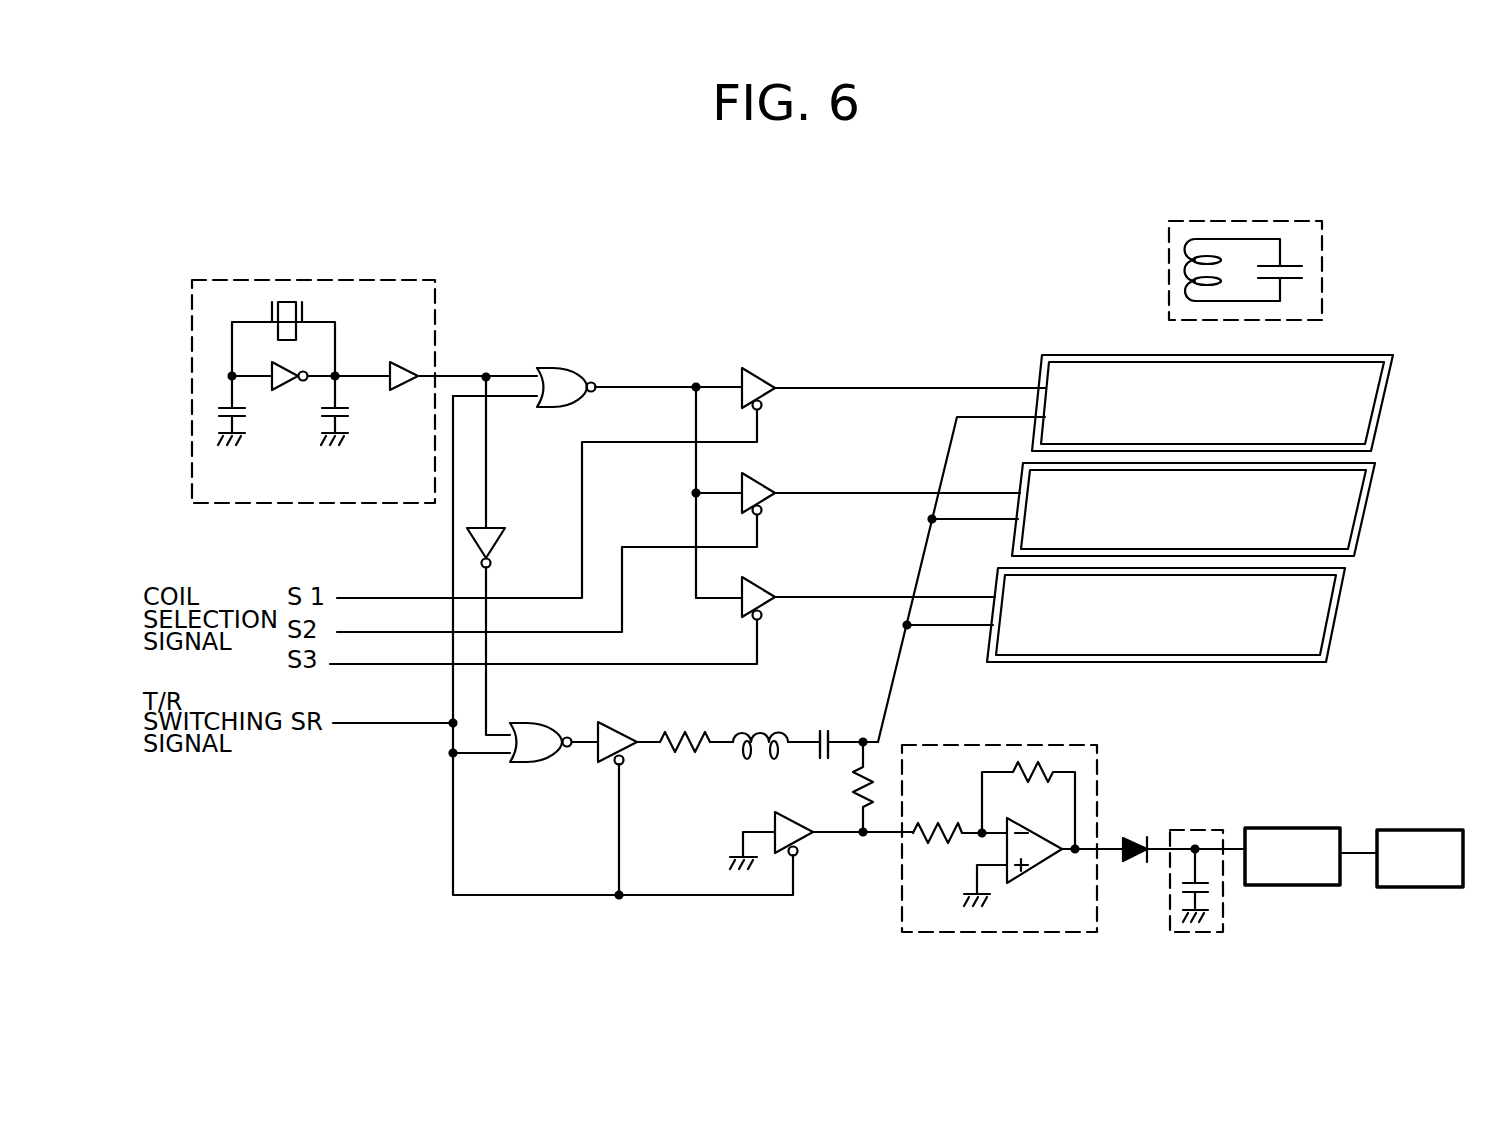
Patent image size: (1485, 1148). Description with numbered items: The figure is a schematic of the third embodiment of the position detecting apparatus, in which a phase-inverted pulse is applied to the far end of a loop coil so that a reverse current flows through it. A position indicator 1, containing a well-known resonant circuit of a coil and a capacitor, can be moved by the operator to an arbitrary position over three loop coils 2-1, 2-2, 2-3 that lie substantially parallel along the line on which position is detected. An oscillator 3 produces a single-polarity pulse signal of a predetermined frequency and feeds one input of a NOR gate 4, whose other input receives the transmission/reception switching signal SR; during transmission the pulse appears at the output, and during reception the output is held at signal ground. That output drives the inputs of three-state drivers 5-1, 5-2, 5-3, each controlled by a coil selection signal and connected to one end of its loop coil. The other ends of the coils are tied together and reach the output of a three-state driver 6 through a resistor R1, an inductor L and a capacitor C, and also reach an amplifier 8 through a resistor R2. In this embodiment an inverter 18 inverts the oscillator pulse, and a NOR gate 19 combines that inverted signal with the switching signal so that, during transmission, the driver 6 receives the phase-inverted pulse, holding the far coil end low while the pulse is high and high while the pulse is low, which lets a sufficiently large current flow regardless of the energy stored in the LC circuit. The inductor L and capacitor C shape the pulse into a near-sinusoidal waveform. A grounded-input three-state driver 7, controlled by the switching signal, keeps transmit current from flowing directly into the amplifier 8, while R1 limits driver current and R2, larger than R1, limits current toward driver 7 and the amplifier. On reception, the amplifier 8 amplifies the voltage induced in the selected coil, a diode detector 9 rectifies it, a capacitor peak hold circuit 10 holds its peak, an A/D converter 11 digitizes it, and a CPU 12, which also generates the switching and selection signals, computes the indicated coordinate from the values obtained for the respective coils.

The position indicator 1 is at (1181, 221).
The loop coil 2-1 is at (1380, 415).
The loop coil 2-2 is at (1362, 508).
The loop coil 2-3 is at (1338, 622).
The oscillator 3 is at (387, 280).
The NOR gate 4 is at (558, 368).
The three-state driver 5-1 is at (765, 375).
The three-state driver 5-2 is at (765, 480).
The three-state driver 5-3 is at (765, 585).
The three-state driver 6 is at (625, 722).
The three-state driver 7 is at (805, 840).
The amplifier 8 is at (1079, 745).
The detector 9 is at (1130, 837).
The peak hold circuit 10 is at (1200, 830).
The analog-to-digital converter 11 is at (1290, 828).
The central processing unit 12 is at (1425, 830).
The inverter 18 is at (503, 528).
The NOR gate 19 is at (530, 723).
The resistor R1 is at (685, 725).
The resistor R2 is at (840, 787).
The inductor L is at (760, 730).
The capacitor C is at (824, 728).